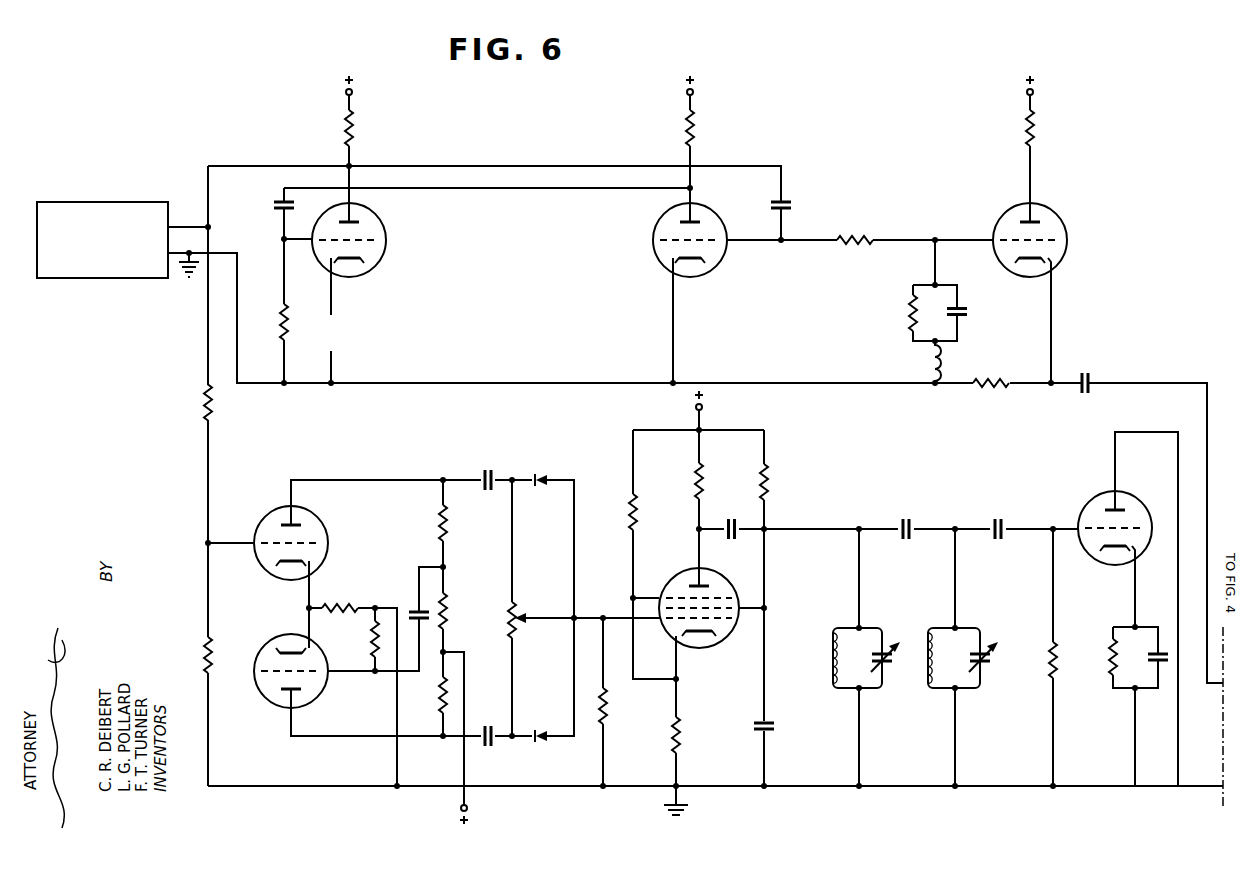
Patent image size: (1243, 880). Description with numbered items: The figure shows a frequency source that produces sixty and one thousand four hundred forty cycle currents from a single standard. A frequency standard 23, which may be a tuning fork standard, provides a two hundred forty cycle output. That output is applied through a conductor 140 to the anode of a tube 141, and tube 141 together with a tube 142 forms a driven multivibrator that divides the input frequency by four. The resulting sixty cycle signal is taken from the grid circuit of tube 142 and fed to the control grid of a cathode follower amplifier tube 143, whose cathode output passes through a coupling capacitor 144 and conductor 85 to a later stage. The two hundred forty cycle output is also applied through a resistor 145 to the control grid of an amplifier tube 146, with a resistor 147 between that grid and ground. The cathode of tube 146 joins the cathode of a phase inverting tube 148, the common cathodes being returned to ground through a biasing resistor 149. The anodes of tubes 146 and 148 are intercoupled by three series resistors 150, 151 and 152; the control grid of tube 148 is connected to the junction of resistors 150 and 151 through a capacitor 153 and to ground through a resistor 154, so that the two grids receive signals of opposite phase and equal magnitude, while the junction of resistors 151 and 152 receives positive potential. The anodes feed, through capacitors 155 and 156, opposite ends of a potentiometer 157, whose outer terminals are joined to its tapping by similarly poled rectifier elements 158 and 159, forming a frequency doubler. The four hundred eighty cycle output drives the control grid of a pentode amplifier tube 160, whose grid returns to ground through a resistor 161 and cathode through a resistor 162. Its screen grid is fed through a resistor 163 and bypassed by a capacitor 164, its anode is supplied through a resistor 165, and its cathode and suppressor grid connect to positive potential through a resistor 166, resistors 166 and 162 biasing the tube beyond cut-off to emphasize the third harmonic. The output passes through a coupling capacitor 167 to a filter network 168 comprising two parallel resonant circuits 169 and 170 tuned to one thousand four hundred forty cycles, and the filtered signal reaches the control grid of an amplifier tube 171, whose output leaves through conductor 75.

The frequency standard 23 is at (122, 203).
The conductor 140 is at (240, 166).
The tube 141 is at (376, 224).
The tube 142 is at (668, 223).
The cathode follower amplifier tube 143 is at (1008, 219).
The coupling capacitor 144 is at (1088, 374).
The resistor 145 is at (204, 401).
The amplifier tube 146 is at (274, 510).
The resistor 147 is at (210, 634).
The phase inverting tube 148 is at (270, 695).
The biasing resistor 149 is at (335, 603).
The resistor 150 is at (438, 512).
The resistor 151 is at (443, 601).
The resistor 152 is at (438, 694).
The capacitor 153 is at (416, 606).
The resistor 154 is at (371, 640).
The capacitor 155 is at (486, 470).
The capacitor 156 is at (487, 747).
The potentiometer 157 is at (508, 625).
The rectifier element 158 is at (542, 472).
The rectifier element 159 is at (544, 745).
The pentode amplifier tube 160 is at (681, 578).
The resistor 161 is at (606, 709).
The resistor 162 is at (682, 719).
The resistor 163 is at (768, 490).
The capacitor 164 is at (758, 722).
The resistor 165 is at (703, 478).
The resistor 166 is at (636, 506).
The coupling capacitor 167 is at (732, 518).
The filter network 168 is at (914, 748).
The parallel resonant circuit 169 is at (875, 651).
The parallel resonant circuit 170 is at (970, 651).
The amplifier tube 171 is at (1097, 499).
The conductor 85 is at (1213, 685).
The conductor 75 is at (1218, 787).